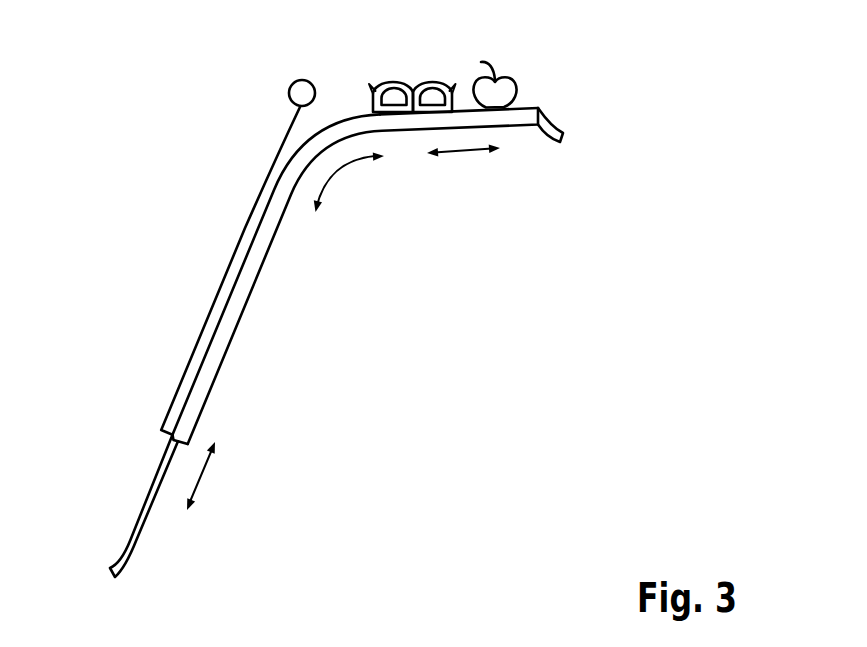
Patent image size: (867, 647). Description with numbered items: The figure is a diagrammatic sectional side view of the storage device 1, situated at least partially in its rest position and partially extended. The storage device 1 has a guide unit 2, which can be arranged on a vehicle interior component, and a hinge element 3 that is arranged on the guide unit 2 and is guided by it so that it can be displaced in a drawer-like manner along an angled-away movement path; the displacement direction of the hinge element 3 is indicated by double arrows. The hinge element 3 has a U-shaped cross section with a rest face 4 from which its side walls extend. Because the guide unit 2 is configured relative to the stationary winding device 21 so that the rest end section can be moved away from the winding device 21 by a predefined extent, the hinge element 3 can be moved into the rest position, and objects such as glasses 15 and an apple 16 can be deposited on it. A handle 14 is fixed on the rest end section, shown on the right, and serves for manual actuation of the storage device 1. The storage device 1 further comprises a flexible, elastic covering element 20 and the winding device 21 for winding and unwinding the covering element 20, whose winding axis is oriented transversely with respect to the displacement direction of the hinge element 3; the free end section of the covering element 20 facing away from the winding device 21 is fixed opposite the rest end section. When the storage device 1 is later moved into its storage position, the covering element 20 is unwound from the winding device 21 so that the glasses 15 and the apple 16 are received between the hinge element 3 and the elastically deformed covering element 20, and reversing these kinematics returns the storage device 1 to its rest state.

The storage device 1 is at (229, 99).
The guide unit 2 is at (138, 496).
The hinge element 3 is at (248, 301).
The rest face 4 is at (352, 112).
The handle 14 is at (549, 124).
The glasses 15 is at (405, 81).
The apple 16 is at (508, 77).
The covering element 20 is at (240, 238).
The winding device 21 is at (302, 93).